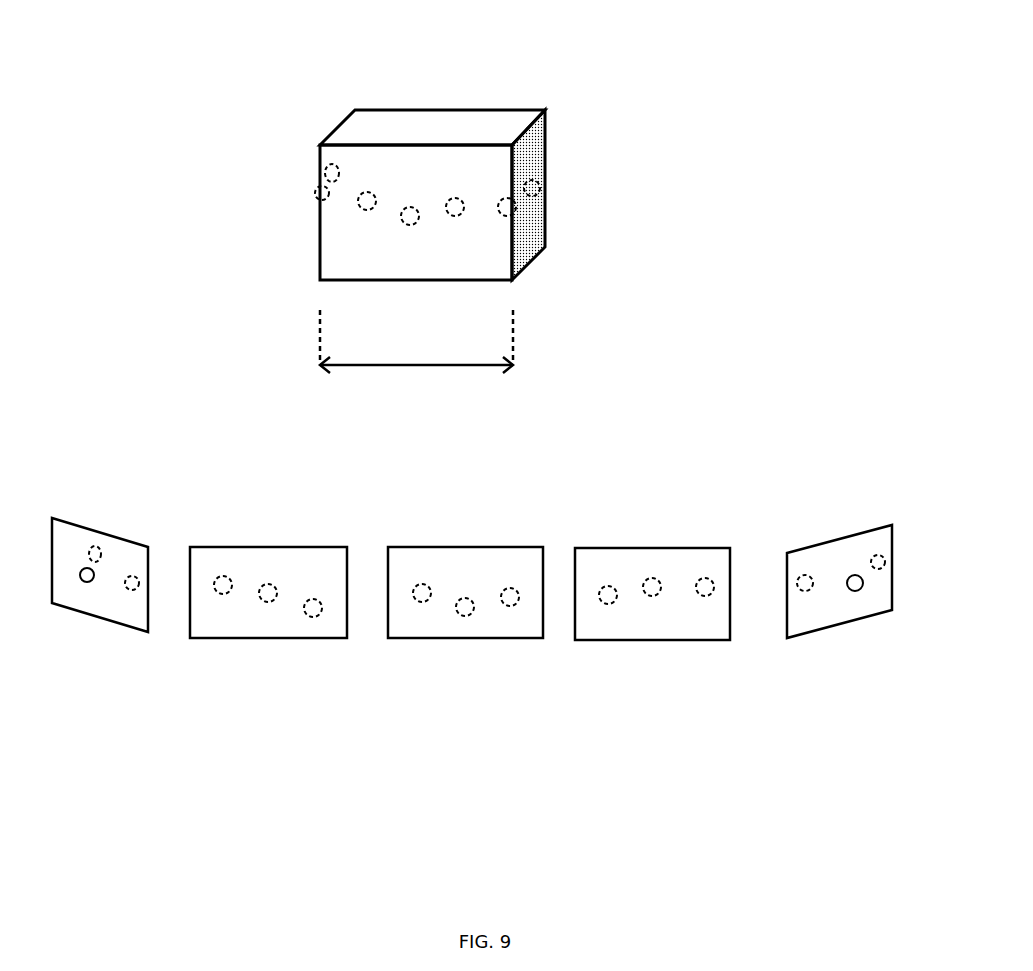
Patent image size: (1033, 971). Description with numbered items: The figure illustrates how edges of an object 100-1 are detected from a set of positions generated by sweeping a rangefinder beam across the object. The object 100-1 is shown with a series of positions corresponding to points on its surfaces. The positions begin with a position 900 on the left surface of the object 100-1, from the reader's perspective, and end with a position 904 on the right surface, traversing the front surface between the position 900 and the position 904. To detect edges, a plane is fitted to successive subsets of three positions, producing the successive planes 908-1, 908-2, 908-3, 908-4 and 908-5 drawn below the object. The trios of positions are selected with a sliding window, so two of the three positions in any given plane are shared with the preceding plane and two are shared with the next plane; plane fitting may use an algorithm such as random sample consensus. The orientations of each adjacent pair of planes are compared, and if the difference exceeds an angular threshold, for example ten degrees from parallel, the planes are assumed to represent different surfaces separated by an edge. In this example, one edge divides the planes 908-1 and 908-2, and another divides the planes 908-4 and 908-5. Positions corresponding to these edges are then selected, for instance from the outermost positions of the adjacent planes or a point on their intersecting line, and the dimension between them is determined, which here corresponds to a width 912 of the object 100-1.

The object 100-1 is at (413, 108).
The position 900 is at (326, 172).
The position 904 is at (528, 186).
The width 912 is at (416, 358).
The plane 908-1 is at (108, 622).
The plane 908-2 is at (252, 638).
The plane 908-3 is at (467, 638).
The plane 908-4 is at (652, 640).
The plane 908-5 is at (852, 623).